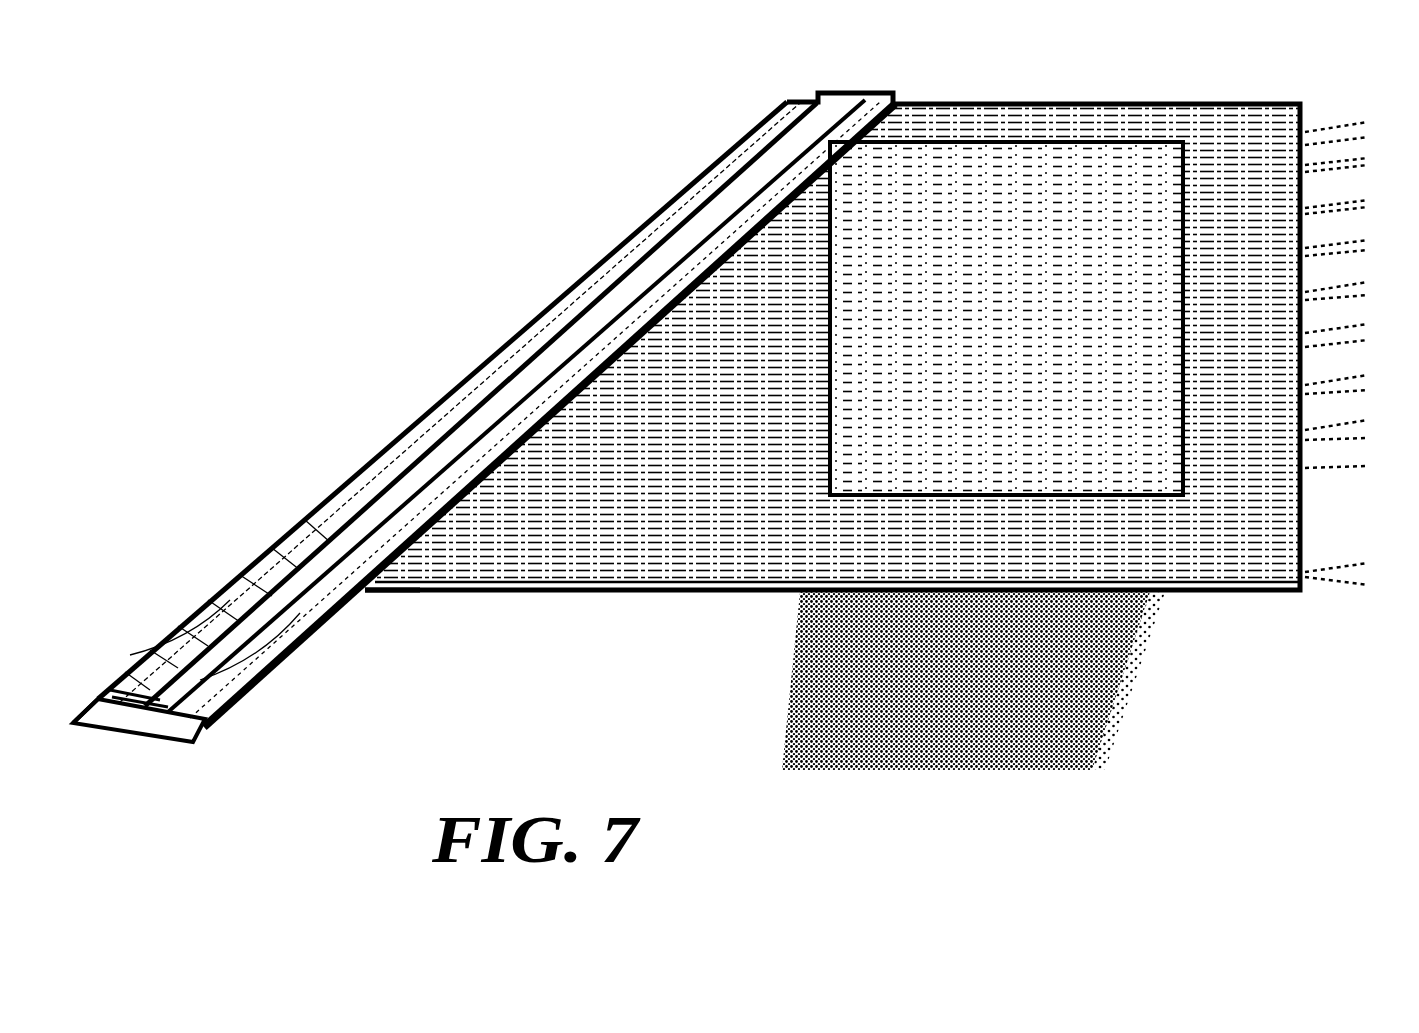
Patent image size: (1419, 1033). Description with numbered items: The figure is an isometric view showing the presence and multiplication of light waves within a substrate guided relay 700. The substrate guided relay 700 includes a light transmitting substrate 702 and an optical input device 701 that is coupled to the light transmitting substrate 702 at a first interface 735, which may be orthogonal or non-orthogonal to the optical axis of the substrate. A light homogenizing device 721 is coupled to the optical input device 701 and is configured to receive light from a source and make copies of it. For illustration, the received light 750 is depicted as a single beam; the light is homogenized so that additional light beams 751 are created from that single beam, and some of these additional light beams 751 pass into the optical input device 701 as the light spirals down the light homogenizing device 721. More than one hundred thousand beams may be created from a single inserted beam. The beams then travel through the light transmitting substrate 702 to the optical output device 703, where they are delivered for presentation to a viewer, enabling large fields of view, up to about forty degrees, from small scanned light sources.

The substrate guided relay 700 is at (345, 300).
The optical input device 701 is at (207, 600).
The light transmitting substrate 702 is at (540, 596).
The optical output device 703 is at (987, 140).
The light homogenizing device 721 is at (138, 684).
The first interface 735 is at (383, 596).
The received light 750 is at (240, 705).
The additional light beams 751 is at (320, 638).